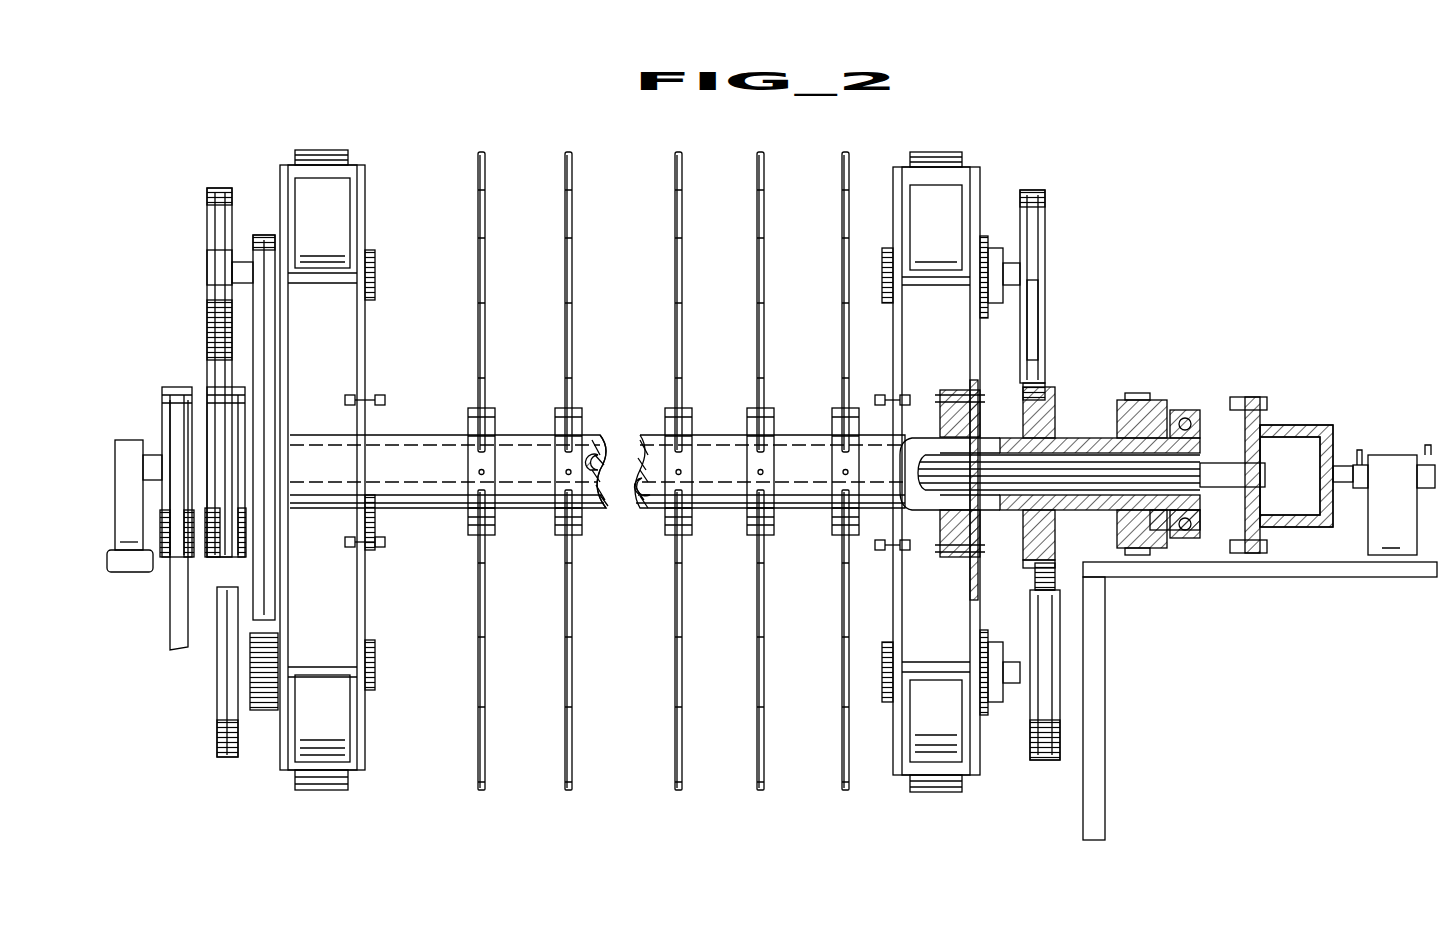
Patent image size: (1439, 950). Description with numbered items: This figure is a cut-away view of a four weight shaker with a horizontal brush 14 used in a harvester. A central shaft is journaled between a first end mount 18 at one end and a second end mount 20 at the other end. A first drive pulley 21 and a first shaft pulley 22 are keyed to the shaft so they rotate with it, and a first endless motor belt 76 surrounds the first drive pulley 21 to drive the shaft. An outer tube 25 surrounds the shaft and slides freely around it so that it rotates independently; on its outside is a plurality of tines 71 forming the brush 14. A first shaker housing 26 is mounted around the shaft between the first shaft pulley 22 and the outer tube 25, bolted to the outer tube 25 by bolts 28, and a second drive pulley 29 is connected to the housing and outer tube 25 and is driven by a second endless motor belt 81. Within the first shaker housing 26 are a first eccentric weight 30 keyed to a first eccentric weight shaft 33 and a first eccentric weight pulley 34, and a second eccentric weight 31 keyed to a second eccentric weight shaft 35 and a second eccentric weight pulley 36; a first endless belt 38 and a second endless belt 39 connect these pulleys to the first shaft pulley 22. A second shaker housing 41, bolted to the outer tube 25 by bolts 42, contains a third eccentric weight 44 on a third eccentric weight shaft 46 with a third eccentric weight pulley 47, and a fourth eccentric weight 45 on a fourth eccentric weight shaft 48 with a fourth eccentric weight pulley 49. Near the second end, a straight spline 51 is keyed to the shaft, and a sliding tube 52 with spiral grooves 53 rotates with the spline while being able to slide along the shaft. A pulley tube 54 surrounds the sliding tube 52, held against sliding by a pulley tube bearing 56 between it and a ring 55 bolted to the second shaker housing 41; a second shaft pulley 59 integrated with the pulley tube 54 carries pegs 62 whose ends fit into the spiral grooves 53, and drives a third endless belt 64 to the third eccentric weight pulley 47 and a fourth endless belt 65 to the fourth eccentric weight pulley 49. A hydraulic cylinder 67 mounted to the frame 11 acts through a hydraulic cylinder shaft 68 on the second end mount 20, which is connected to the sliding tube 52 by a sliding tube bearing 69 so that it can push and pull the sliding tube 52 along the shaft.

The frame 11 is at (1340, 578).
The brush 14 is at (486, 114).
The first end mount 18 is at (123, 440).
The second end mount 20 is at (1252, 397).
The first drive pulley 21 is at (162, 405).
The first shaft pulley 22 is at (207, 392).
The outer tube 25 is at (640, 505).
The first shaker housing 26 is at (366, 188).
The bolts 28 is at (380, 450).
The second drive pulley 29 is at (252, 242).
The first eccentric weight 30 is at (320, 150).
The second eccentric weight 31 is at (318, 790).
The first eccentric weight shaft 33 is at (318, 283).
The first eccentric weight pulley 34 is at (207, 218).
The second eccentric weight shaft 35 is at (316, 667).
The second eccentric weight pulley 36 is at (218, 722).
The first endless belt 38 is at (210, 282).
The second endless belt 39 is at (220, 678).
The second shaker housing 41 is at (980, 190).
The bolts 42 is at (870, 415).
The third eccentric weight 44 is at (942, 152).
The fourth eccentric weight 45 is at (928, 792).
The third eccentric weight shaft 46 is at (1010, 275).
The third eccentric weight pulley 47 is at (1045, 210).
The fourth eccentric weight shaft 48 is at (1010, 683).
The fourth eccentric weight pulley 49 is at (1030, 740).
The straight spline 51 is at (1205, 438).
The sliding tube 52 is at (1172, 412).
The spiral grooves 53 is at (1060, 435).
The pulley tube 54 is at (1110, 430).
The ring 55 is at (980, 560).
The pulley tube bearing 56 is at (985, 415).
The second shaft pulley 59 is at (1058, 550).
The pegs 62 is at (1045, 388).
The third endless belt 64 is at (1032, 298).
The fourth endless belt 65 is at (1045, 628).
The hydraulic cylinder 67 is at (1422, 455).
The hydraulic cylinder shaft 68 is at (1355, 462).
The sliding tube bearing 69 is at (1175, 540).
The tines 71 is at (565, 170).
The first endless motor belt 76 is at (168, 630).
The second endless motor belt 81 is at (282, 585).